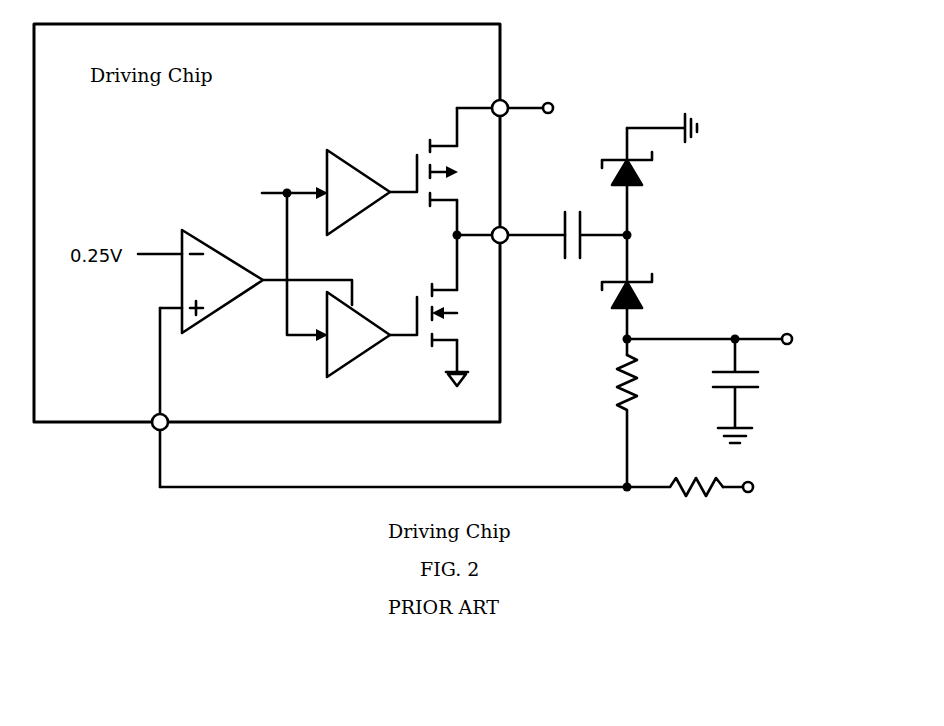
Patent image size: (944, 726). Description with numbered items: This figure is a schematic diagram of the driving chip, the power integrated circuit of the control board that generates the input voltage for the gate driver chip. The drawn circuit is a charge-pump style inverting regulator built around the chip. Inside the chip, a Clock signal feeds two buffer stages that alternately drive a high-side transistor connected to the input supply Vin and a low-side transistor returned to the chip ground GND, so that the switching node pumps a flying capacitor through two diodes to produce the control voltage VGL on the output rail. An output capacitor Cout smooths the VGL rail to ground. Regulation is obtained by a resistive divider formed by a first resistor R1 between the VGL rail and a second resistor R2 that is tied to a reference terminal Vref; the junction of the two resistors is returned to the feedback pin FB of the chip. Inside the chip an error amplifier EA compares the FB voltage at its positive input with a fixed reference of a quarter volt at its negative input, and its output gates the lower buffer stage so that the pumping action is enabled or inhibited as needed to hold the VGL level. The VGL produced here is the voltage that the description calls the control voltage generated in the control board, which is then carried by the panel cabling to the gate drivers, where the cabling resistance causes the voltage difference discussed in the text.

The resistor R1 is at (601, 421).
The resistor R2 is at (675, 468).
The output capacitor Cout is at (767, 389).
The error amplifier EA is at (200, 281).
The feedback terminal FB is at (170, 397).
The input voltage terminal Vin is at (528, 101).
The control voltage VGL is at (740, 338).
The reference voltage terminal Vref is at (769, 488).
The ground terminal GND is at (446, 394).
The clock input Clock is at (266, 263).